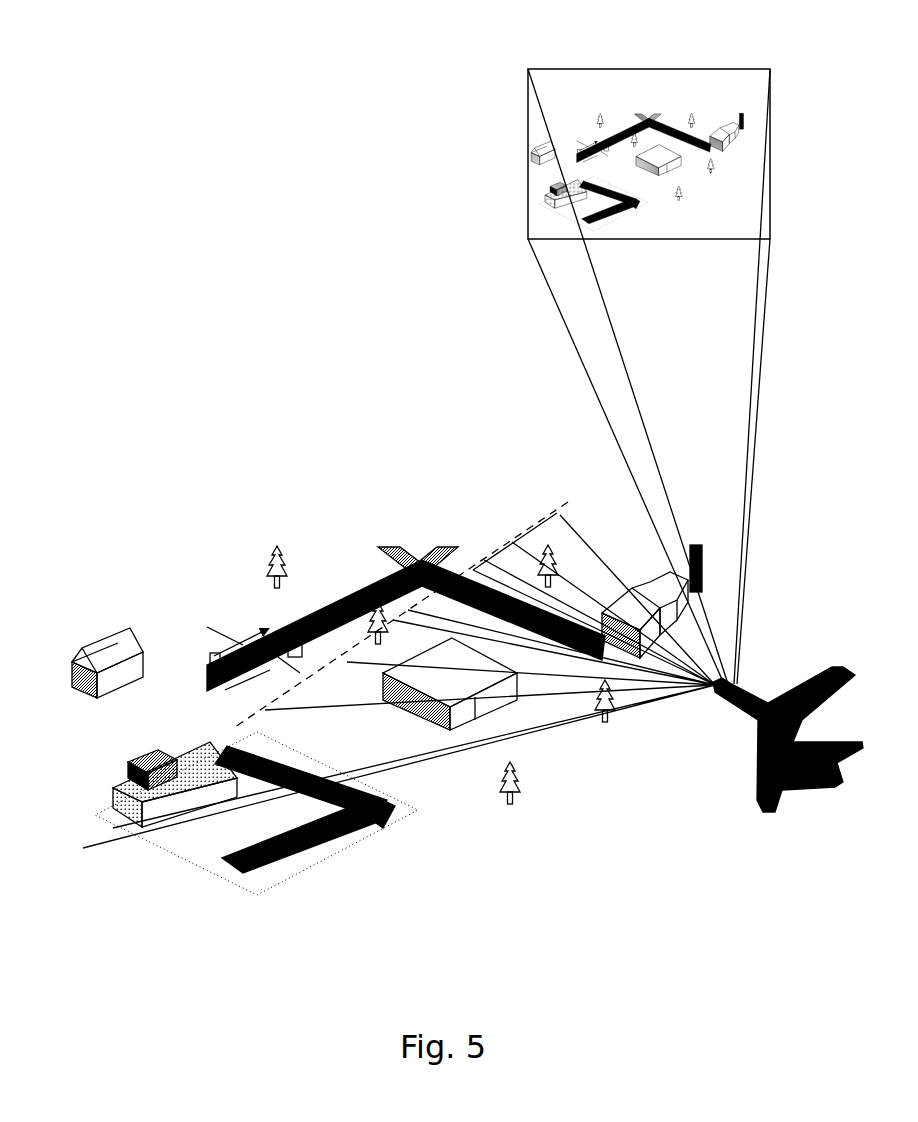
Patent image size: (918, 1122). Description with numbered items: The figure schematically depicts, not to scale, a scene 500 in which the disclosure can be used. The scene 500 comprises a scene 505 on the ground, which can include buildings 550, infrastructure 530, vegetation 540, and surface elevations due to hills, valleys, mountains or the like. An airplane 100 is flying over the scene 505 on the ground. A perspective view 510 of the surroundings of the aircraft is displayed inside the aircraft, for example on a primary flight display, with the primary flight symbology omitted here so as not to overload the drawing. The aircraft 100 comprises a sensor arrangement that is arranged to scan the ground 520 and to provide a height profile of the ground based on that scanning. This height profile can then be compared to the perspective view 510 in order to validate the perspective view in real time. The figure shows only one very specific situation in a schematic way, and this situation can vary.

The airplane 100 is at (757, 800).
The scene 500 is at (195, 170).
The scene on the ground 505 is at (380, 455).
The perspective view 510 is at (612, 68).
The ground 520 is at (580, 527).
The infrastructure 530 is at (558, 665).
The vegetation 540 is at (496, 768).
The buildings 550 is at (115, 632).